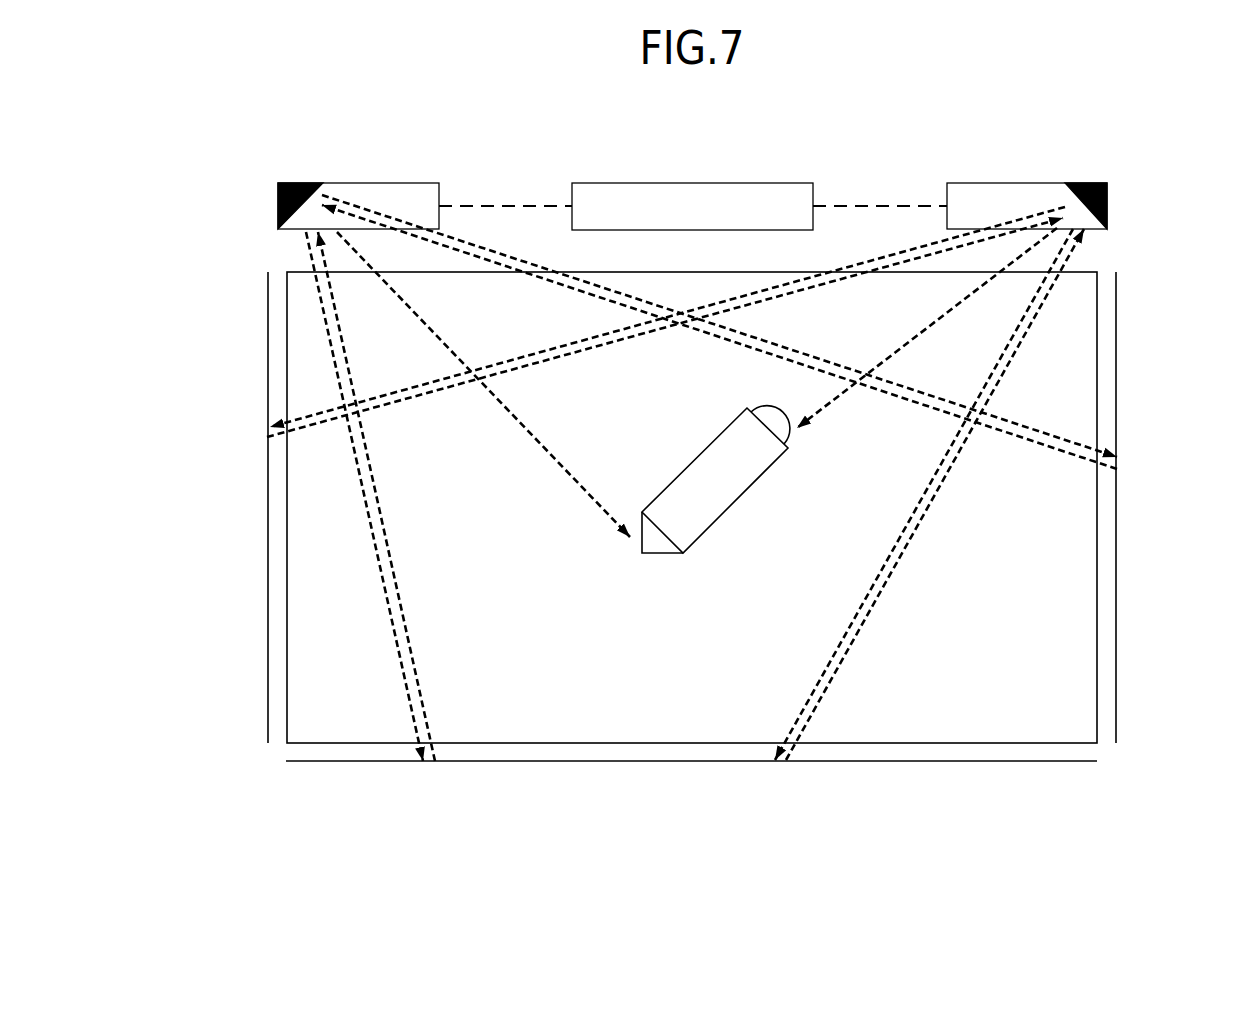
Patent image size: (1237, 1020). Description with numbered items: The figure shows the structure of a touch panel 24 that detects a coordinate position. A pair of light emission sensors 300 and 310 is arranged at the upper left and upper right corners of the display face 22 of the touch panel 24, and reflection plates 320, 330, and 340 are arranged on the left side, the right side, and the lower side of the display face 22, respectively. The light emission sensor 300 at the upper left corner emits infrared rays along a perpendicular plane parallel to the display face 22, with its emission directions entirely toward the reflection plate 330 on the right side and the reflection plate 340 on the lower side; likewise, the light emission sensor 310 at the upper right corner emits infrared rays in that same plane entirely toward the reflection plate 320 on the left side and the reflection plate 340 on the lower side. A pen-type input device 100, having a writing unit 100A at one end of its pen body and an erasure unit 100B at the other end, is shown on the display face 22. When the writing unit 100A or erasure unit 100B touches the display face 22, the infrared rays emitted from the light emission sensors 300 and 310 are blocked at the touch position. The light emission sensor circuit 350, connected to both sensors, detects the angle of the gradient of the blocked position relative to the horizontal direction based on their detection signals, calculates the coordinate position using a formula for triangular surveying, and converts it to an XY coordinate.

The display face 22 is at (1063, 622).
The touch panel 24 is at (693, 559).
The pen-type input device 100 is at (724, 493).
The writing unit 100A is at (660, 556).
The erasure unit 100B is at (770, 408).
The light emission sensor 300 is at (357, 182).
The light emission sensor 310 is at (1025, 182).
The reflection plate 320 is at (268, 533).
The reflection plate 330 is at (1107, 532).
The reflection plate 340 is at (904, 756).
The light emission sensor circuit 350 is at (692, 182).